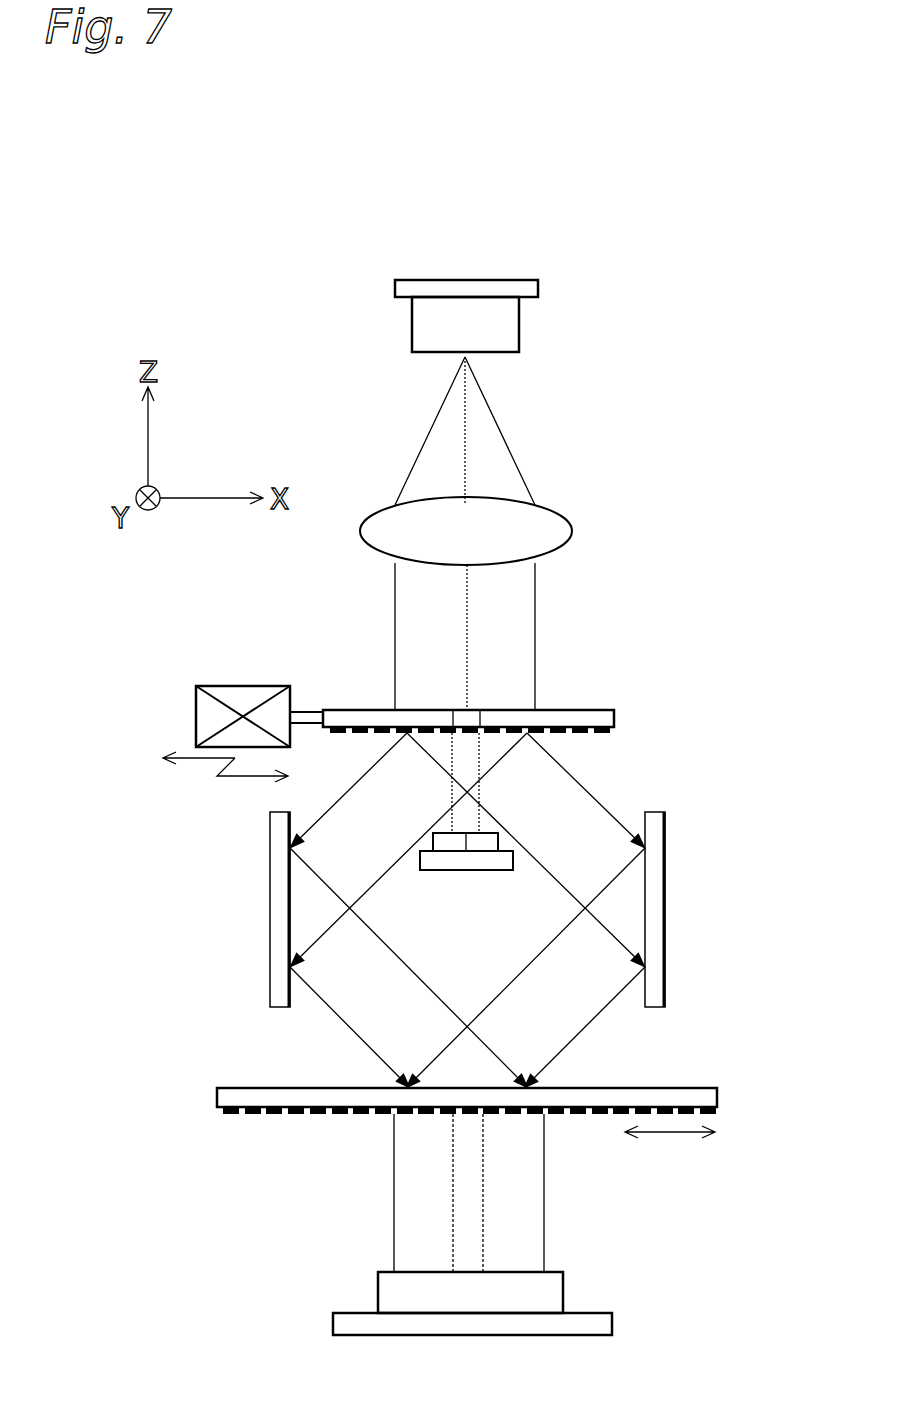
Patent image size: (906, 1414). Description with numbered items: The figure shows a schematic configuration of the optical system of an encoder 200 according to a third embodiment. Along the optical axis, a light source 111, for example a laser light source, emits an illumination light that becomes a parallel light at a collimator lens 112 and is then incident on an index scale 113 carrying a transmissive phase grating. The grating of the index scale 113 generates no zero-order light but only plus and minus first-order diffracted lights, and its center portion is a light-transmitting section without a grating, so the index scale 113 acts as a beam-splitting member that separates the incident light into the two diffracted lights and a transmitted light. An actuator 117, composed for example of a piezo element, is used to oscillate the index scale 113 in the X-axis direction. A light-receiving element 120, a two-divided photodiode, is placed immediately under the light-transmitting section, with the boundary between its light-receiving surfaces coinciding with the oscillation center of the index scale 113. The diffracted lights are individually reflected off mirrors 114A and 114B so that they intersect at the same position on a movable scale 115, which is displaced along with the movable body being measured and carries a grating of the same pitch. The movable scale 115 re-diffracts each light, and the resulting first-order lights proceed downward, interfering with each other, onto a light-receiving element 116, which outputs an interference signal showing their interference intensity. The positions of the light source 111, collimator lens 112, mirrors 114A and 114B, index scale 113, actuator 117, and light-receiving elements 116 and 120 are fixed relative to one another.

The encoder 200 is at (352, 242).
The light source 111 is at (538, 282).
The collimator lens 112 is at (598, 476).
The index scale 113 is at (583, 710).
The mirror 114A is at (270, 888).
The mirror 114B is at (665, 888).
The movable scale 115 is at (697, 1088).
The light-receiving element 116 is at (563, 1272).
The actuator 117 is at (255, 686).
The light-receiving element 120 is at (487, 871).